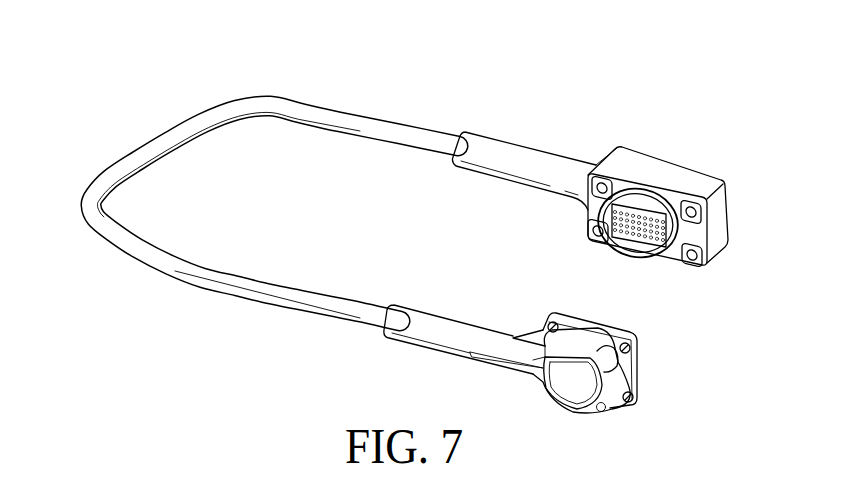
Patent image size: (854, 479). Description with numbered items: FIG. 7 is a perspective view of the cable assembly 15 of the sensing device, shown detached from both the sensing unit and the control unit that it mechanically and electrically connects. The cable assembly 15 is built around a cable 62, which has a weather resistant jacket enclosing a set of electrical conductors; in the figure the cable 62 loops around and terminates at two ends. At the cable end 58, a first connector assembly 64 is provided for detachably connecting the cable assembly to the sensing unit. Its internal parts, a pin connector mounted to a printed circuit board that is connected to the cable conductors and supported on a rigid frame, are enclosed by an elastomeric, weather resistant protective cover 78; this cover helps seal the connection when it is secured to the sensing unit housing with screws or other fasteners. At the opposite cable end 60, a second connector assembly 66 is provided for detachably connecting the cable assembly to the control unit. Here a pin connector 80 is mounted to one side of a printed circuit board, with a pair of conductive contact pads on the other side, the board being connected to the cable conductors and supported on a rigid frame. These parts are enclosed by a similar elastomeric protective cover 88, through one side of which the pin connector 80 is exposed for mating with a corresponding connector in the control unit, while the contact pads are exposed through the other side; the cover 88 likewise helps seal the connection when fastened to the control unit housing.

The cable assembly 15 is at (447, 199).
The cable end 58 is at (499, 379).
The cable end 60 is at (587, 150).
The cable 62 is at (206, 270).
The first connector assembly 64 is at (610, 395).
The second connector assembly 66 is at (650, 190).
The protective cover 78 is at (626, 379).
The pin connector 80 is at (630, 231).
The protective cover 88 is at (674, 176).